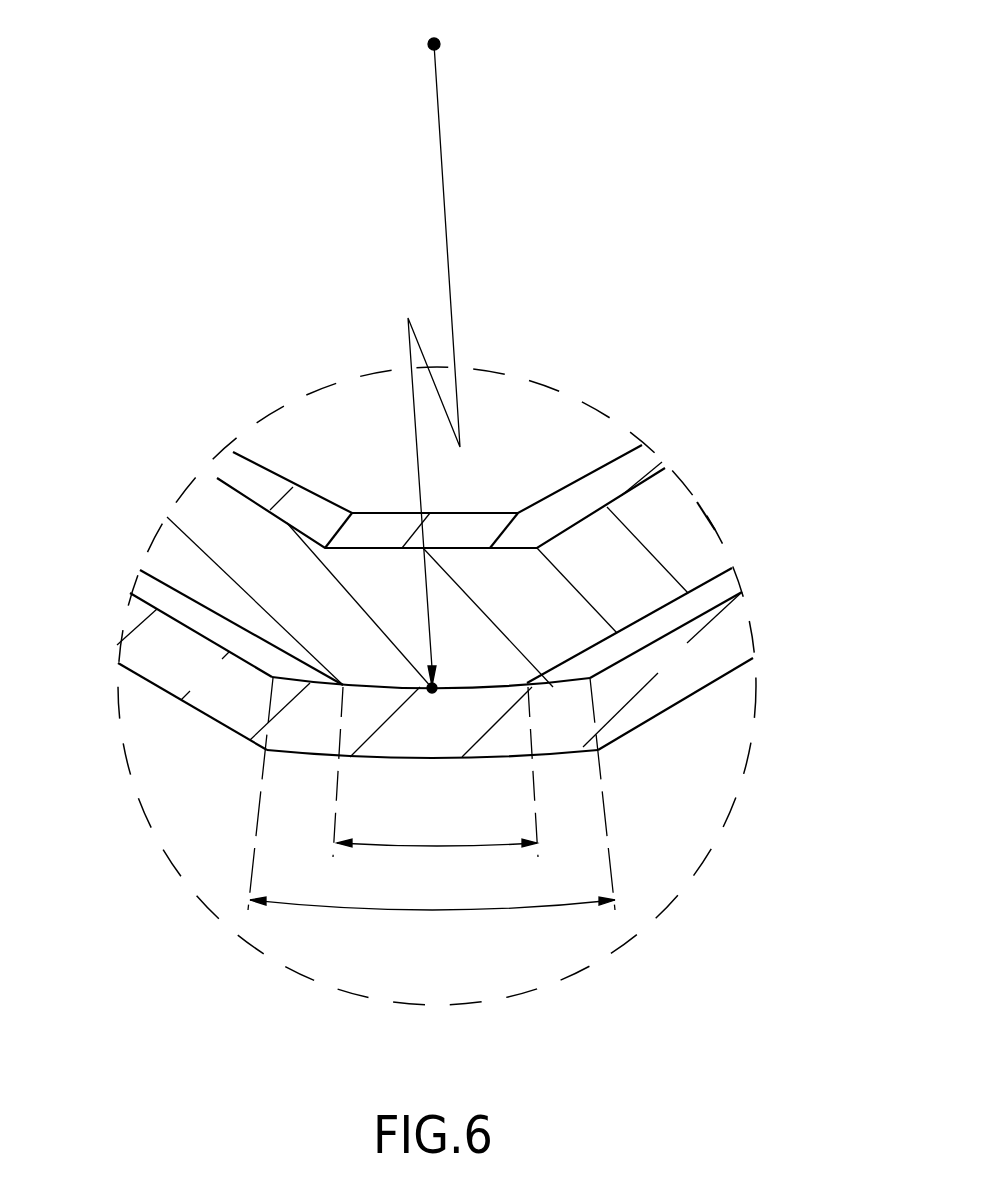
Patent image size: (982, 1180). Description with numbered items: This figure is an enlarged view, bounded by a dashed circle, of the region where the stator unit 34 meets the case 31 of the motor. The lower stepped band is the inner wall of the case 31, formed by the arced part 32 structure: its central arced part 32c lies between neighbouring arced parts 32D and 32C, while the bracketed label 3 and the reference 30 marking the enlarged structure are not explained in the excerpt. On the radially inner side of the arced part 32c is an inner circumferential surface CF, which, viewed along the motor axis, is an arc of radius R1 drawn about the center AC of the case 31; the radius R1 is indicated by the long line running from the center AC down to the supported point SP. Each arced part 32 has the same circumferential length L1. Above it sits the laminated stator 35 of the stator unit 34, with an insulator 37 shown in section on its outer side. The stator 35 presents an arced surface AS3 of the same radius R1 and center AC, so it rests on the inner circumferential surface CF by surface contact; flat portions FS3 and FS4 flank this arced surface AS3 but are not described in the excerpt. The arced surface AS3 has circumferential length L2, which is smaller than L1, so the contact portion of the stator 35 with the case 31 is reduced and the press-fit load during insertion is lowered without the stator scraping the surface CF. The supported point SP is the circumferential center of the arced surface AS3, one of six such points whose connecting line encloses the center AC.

The lens unit (enlarged portion) 30 is at (219, 383).
The case 31 is at (203, 723).
The second member (lower plate) 32 is at (642, 734).
The third arced part 32c is at (459, 735).
The right inclined portion of second member 32C is at (707, 677).
The left inclined portion of second member 32D is at (217, 682).
The stator unit 34 is at (170, 594).
The stator 35 is at (708, 508).
The insulator 37 is at (580, 500).
The center of the case AC is at (452, 46).
The radius R1 is at (447, 365).
The third arced surface AS3 is at (382, 687).
The supported point SP is at (432, 688).
The inner circumferential surface CF is at (560, 682).
The flat surface 3 FS3 is at (660, 612).
The flat surface 4 FS4 is at (210, 604).
The length dimension of arced part L1 is at (431, 794).
The length dimension of arced surface L2 is at (435, 772).
The element 3 (lens) 3 is at (435, 956).